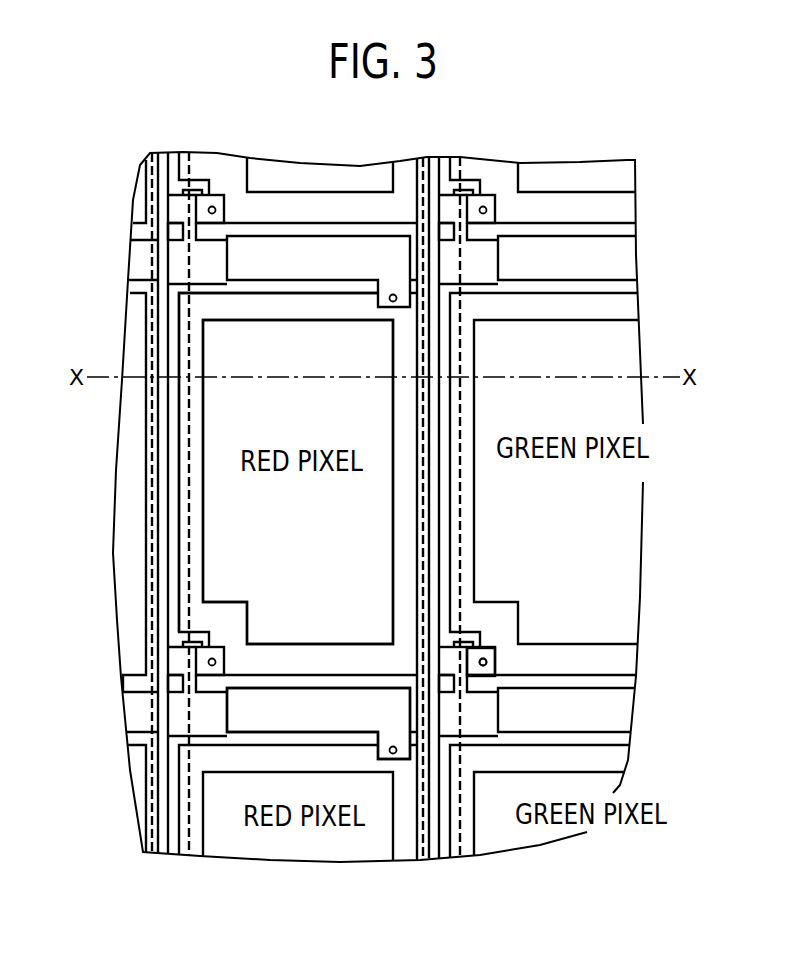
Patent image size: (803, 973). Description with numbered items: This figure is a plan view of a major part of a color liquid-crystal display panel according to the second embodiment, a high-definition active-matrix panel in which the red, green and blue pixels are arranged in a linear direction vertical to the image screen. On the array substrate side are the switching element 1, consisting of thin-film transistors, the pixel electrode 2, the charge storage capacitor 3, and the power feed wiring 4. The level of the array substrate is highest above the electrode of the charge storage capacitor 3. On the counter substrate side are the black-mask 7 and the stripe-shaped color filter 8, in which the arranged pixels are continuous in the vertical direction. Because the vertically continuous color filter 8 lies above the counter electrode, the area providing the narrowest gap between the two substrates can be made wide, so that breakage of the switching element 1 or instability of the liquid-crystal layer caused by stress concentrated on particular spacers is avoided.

The switching element 1 is at (482, 653).
The pixel electrode 2 is at (180, 615).
The charge storage capacitor 3 is at (297, 715).
The power feed wiring 4 is at (473, 713).
The black-mask 7 is at (203, 552).
The color filter 8 is at (148, 483).